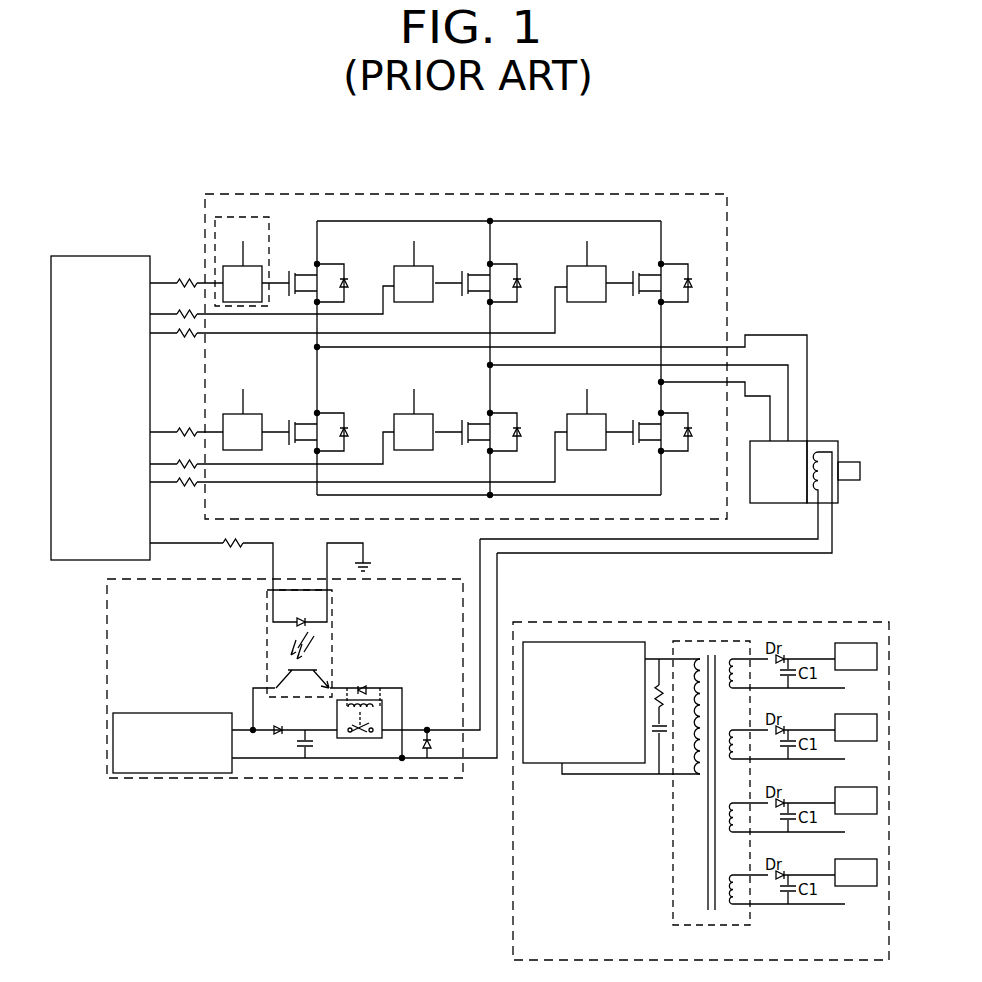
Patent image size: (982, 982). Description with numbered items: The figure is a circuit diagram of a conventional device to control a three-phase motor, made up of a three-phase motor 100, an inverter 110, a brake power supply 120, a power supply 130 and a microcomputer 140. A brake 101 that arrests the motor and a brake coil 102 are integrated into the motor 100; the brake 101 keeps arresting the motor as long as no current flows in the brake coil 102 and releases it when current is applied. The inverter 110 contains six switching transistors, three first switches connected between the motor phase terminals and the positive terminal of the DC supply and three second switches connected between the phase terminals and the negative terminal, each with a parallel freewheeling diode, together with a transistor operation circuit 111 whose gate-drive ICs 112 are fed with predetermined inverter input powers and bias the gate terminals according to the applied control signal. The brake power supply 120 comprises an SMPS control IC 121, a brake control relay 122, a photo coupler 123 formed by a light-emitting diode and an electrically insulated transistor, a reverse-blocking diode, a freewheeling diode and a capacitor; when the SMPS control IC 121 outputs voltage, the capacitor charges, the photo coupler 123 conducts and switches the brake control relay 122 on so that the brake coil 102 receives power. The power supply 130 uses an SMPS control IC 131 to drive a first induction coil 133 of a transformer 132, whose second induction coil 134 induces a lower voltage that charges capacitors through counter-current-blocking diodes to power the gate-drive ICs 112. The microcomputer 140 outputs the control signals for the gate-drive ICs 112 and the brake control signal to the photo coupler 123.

The 3-phase motor 100 is at (750, 487).
The brake 101 is at (838, 443).
The brake coil 102 is at (820, 486).
The inverter 110 is at (406, 194).
The transistor operation circuit 111 is at (256, 217).
The gate-drive IC 112 is at (228, 266).
The brake power supply 120 is at (107, 689).
The SMPS control IC 121 is at (178, 713).
The brake control relay 122 is at (380, 690).
The photo coupler 123 is at (267, 620).
The power supply 130 is at (802, 622).
The SMPS control IC 131 is at (558, 642).
The transformer 132 is at (673, 648).
The first induction coil 133 is at (697, 659).
The second induction coil 134 is at (733, 659).
The microcomputer 140 is at (95, 256).